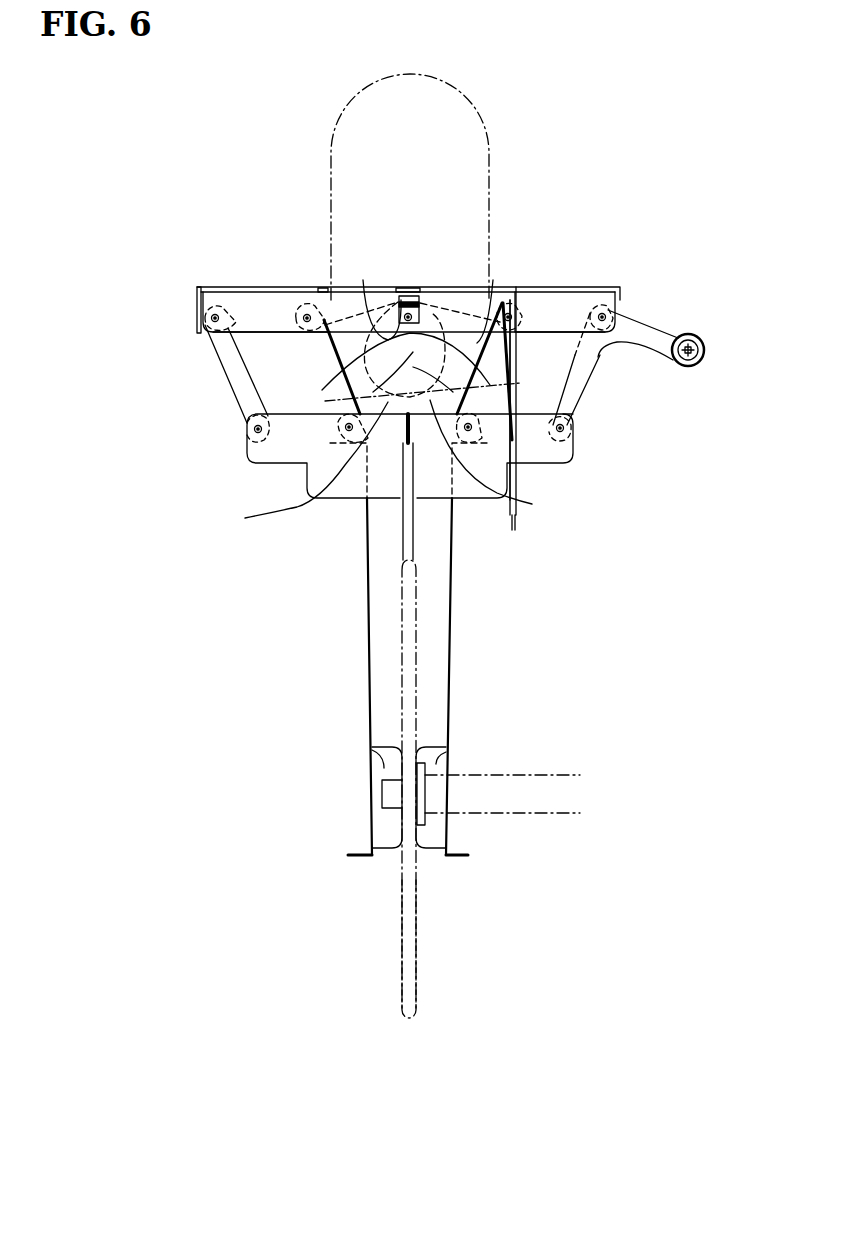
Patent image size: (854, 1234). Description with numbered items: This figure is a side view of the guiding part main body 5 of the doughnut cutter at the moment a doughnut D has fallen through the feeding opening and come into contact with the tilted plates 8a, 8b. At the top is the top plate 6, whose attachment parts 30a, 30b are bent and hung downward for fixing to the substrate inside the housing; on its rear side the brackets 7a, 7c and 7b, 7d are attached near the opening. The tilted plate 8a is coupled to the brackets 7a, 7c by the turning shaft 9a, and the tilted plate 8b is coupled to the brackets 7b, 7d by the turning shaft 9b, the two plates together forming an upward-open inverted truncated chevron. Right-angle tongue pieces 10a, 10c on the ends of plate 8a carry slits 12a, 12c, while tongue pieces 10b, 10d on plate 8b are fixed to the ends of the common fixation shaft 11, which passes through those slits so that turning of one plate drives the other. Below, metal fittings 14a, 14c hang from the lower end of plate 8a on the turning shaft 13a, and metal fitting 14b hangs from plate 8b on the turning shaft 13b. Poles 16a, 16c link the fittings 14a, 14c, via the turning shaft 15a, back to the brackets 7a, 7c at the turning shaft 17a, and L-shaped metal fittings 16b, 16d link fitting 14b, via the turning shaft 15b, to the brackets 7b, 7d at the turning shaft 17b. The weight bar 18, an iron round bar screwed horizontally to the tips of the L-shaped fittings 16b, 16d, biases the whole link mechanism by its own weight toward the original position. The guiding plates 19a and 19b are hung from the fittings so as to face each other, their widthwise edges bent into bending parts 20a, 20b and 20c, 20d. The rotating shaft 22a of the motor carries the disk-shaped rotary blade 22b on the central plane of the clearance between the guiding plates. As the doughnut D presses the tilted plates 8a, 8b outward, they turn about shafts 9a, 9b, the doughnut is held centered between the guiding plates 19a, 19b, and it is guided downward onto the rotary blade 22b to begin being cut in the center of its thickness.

The doughnut D is at (490, 147).
The guiding part main body 5 is at (521, 225).
The top plate 6 is at (276, 287).
The bracket 7a is at (266, 334).
The bracket 7c is at (291, 333).
The bracket 7b is at (565, 337).
The bracket 7d is at (548, 333).
The tilted plate 8a is at (348, 372).
The tilted plate 8b is at (487, 372).
The turning shaft 9a is at (306, 305).
The turning shaft 9b is at (506, 305).
The tongue piece 10a is at (322, 487).
The tongue piece 10c is at (348, 433).
The tongue piece 10b is at (501, 487).
The tongue piece 10d is at (468, 433).
The fixation shaft 11 is at (405, 296).
The slit 12a is at (421, 311).
The slit 12c is at (371, 332).
The turning shaft 13a is at (301, 470).
The turning shaft 13b is at (507, 463).
The metal fitting 14a is at (407, 459).
The metal fitting 14c is at (273, 465).
The metal fitting 14b is at (520, 465).
The turning shaft 15a is at (258, 442).
The turning shaft 15b is at (566, 436).
The pole 16a is at (207, 374).
The pole 16c is at (224, 385).
The L-shaped metal fitting 16b is at (620, 367).
The L-shaped metal fitting 16d is at (599, 384).
The turning shaft 17a is at (215, 305).
The turning shaft 17b is at (600, 305).
The weight bar 18 is at (690, 334).
The guiding plate 19a is at (367, 630).
The guiding plate 19b is at (448, 630).
The bending part 20a is at (342, 779).
The bending part 20b is at (378, 769).
The bending part 20c is at (479, 782).
The bending part 20d is at (443, 760).
The rotating shaft 22a is at (530, 813).
The rotary blade 22b is at (417, 910).
The attachment part 30a is at (575, 358).
The attachment part 30b is at (518, 347).